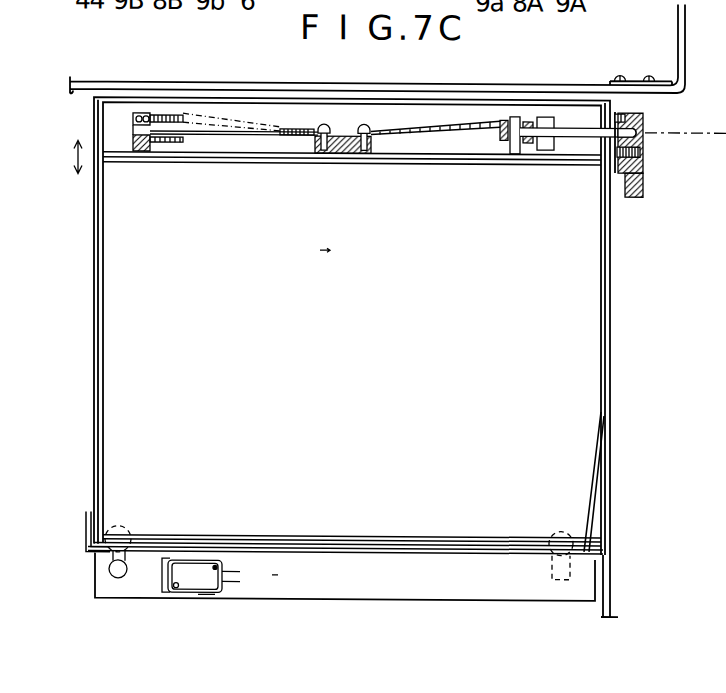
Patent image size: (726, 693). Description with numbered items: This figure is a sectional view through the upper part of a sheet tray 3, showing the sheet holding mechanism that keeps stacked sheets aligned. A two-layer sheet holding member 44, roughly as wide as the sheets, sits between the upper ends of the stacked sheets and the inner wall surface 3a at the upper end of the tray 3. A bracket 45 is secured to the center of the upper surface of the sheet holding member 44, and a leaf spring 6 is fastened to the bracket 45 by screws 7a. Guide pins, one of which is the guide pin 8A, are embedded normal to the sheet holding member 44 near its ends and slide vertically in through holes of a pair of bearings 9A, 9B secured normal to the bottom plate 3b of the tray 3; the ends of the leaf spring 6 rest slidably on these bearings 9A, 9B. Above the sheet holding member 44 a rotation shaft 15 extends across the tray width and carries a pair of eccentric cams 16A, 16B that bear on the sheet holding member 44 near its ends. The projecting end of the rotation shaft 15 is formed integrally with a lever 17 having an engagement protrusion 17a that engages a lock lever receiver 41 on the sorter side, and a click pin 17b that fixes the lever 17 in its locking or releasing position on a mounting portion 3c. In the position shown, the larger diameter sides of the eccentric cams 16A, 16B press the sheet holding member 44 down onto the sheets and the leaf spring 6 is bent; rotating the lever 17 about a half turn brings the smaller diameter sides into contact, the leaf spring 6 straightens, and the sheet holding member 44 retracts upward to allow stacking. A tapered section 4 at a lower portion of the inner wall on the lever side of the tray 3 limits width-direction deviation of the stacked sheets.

The tray 3 is at (351, 357).
The inner wall surface 3a is at (260, 108).
The bottom plate 3b is at (582, 254).
The mounting plate 3c is at (625, 112).
The tapered section 4 is at (586, 494).
The leaf spring 6 is at (454, 117).
The screws 7a is at (363, 122).
The guide pin 8A is at (515, 113).
The bearing 9A is at (530, 118).
The bearing 9B is at (172, 117).
The rotation shaft 15 is at (222, 152).
The eccentric cam 16A is at (547, 147).
The eccentric cam 16B is at (133, 141).
The tray locking and sheet holding member drive lever 17 is at (637, 180).
The engagement protrusion 17a is at (637, 193).
The click pin 17b is at (643, 149).
The lock lever receiver 41 is at (633, 77).
The sheet holding member 44 is at (150, 151).
The bracket 45 is at (335, 152).